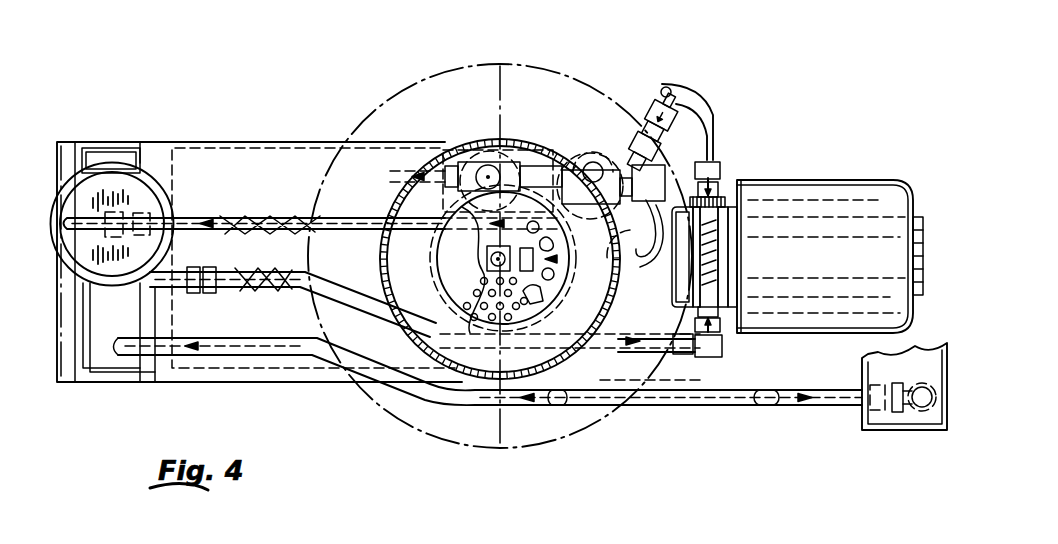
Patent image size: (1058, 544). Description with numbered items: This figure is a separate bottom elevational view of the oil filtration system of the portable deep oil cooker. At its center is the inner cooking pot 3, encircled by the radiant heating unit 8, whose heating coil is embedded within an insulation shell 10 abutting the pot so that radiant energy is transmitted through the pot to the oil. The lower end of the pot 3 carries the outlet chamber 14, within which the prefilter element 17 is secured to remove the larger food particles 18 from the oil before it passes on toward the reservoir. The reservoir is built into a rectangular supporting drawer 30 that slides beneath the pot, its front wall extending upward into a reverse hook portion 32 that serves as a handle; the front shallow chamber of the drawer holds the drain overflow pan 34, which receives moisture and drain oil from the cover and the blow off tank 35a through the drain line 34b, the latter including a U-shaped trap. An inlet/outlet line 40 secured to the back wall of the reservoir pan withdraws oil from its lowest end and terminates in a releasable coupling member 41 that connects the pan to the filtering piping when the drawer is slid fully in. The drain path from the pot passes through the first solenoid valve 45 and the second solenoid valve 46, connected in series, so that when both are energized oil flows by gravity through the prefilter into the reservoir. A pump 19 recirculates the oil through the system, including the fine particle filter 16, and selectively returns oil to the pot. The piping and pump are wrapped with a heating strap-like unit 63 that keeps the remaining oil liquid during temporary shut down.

The cooking pot 3 is at (560, 370).
The radiant heating unit 8 is at (545, 450).
The insulation shell 10 is at (603, 413).
The outlet chamber 14 is at (540, 307).
The fine particle filter 16 is at (116, 164).
The prefilter element 17 is at (435, 262).
The food particles 18 is at (552, 240).
The pump 19 is at (730, 185).
The supporting drawer 30 is at (277, 140).
The reverse hook portion 32 is at (67, 144).
The drain overflow pan 34 is at (100, 372).
The drain line 34b is at (787, 406).
The blow off tank 35a is at (887, 431).
The inlet/outlet line 40 is at (402, 177).
The releasable coupling member 41 is at (452, 132).
The first solenoid valve 45 is at (590, 147).
The second solenoid valve 46 is at (500, 148).
The heating strap-like unit 63 is at (273, 253).